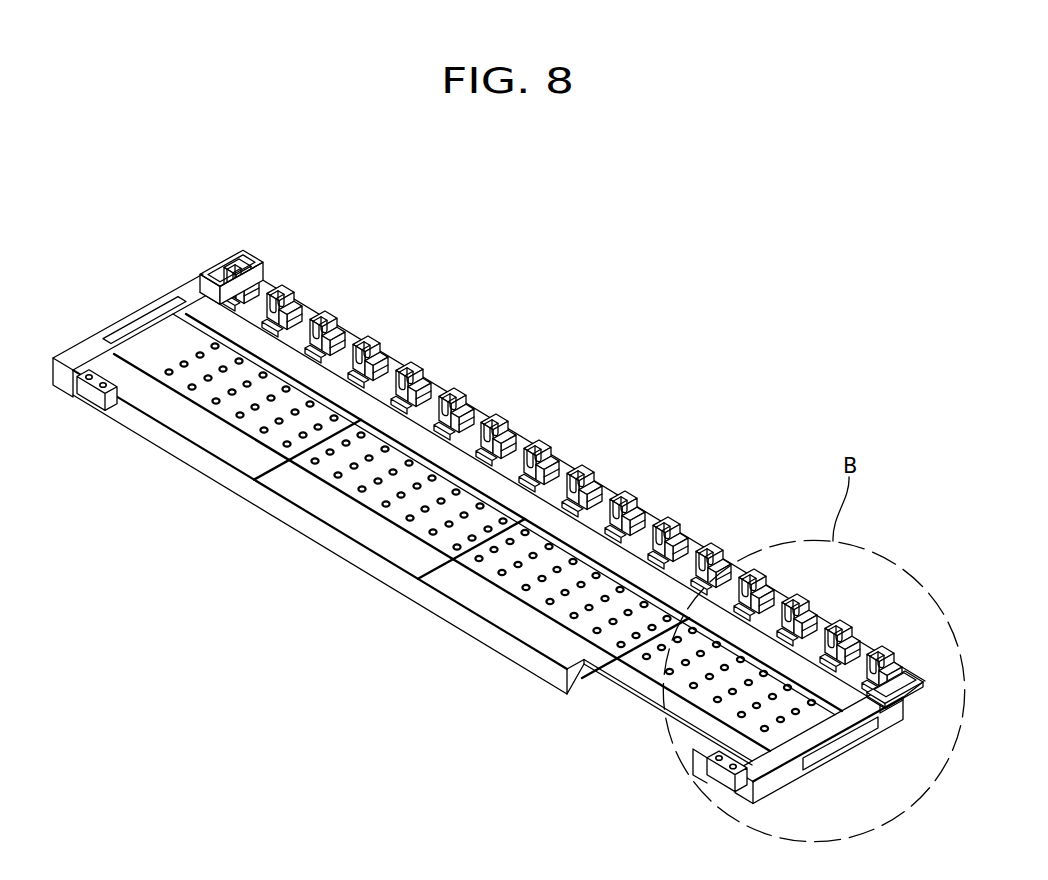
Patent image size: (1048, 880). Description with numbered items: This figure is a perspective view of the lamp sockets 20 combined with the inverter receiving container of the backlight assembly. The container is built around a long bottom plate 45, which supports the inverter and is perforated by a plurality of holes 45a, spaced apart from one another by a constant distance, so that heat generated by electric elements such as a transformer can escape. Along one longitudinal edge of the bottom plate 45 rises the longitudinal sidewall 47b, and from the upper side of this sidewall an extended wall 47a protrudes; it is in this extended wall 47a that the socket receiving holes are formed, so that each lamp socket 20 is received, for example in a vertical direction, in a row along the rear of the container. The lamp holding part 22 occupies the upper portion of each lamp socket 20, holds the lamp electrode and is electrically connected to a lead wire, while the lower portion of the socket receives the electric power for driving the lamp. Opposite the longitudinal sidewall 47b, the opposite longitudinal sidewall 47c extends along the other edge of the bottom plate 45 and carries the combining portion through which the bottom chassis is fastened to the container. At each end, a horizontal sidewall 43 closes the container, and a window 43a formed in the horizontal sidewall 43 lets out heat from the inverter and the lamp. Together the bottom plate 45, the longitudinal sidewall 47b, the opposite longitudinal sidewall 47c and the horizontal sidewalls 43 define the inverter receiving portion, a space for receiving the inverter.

The lamp socket 20 is at (603, 478).
The lamp holding part 22 is at (840, 613).
The horizontal sidewall 43 is at (88, 356).
The window 43a is at (128, 332).
The bottom plate 45 is at (547, 634).
The holes 45a is at (527, 590).
The extended wall 47a is at (921, 683).
The longitudinal sidewall 47b is at (902, 693).
The opposite longitudinal sidewall 47c is at (739, 792).